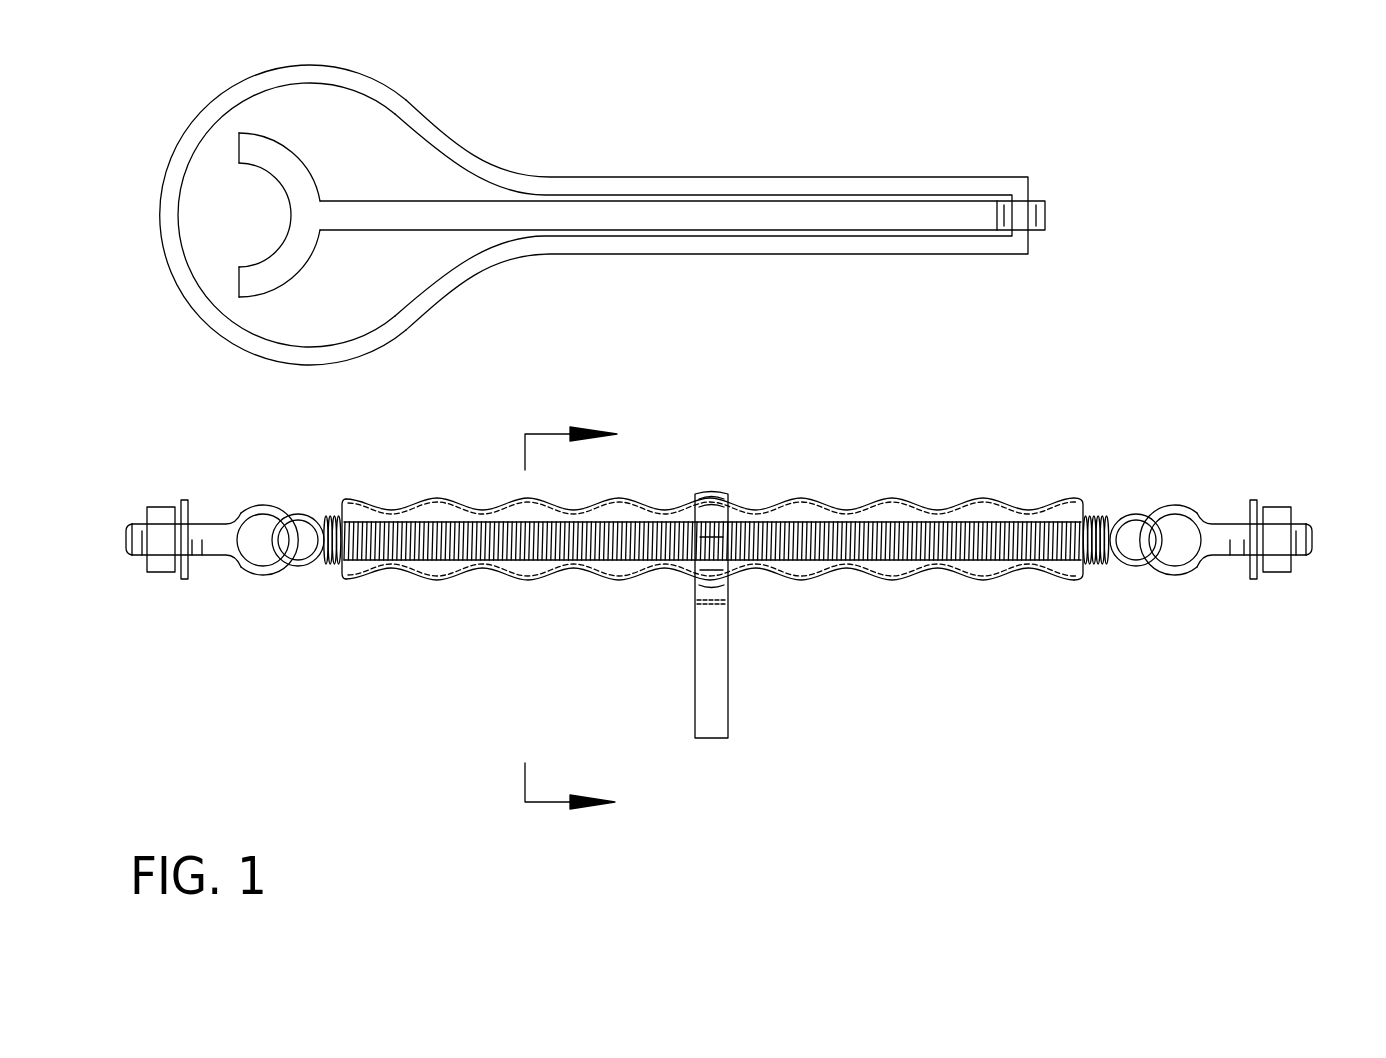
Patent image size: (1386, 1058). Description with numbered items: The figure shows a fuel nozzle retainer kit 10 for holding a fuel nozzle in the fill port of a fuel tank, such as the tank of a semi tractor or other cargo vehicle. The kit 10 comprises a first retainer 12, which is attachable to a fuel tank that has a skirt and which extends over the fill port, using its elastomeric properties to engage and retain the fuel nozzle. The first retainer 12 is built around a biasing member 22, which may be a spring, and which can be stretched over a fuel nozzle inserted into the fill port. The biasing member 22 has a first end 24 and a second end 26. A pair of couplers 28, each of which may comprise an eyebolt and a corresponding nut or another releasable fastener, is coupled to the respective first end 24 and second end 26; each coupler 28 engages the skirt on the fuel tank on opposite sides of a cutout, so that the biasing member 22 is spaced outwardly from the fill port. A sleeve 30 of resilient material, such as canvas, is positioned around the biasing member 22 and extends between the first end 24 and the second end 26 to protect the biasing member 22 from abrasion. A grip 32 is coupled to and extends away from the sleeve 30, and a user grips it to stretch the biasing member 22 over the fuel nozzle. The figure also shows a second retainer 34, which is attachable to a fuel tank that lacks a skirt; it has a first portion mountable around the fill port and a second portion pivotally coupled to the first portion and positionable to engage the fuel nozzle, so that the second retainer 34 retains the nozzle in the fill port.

The fuel nozzle retainer kit 10 is at (1168, 203).
The first retainer 12 is at (1046, 490).
The biasing member 22 is at (437, 553).
The first end 24 is at (300, 513).
The second end 26 is at (1137, 513).
The couplers 28 is at (212, 527).
The sleeve 30 is at (552, 580).
The grip 32 is at (728, 678).
The second retainer 34 is at (654, 150).